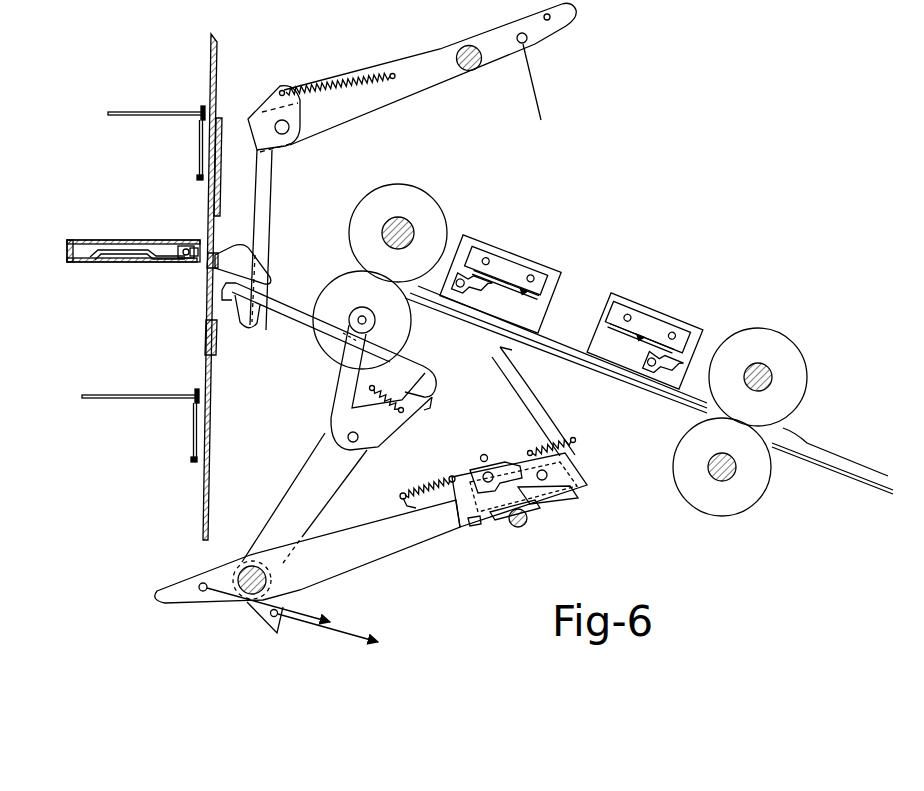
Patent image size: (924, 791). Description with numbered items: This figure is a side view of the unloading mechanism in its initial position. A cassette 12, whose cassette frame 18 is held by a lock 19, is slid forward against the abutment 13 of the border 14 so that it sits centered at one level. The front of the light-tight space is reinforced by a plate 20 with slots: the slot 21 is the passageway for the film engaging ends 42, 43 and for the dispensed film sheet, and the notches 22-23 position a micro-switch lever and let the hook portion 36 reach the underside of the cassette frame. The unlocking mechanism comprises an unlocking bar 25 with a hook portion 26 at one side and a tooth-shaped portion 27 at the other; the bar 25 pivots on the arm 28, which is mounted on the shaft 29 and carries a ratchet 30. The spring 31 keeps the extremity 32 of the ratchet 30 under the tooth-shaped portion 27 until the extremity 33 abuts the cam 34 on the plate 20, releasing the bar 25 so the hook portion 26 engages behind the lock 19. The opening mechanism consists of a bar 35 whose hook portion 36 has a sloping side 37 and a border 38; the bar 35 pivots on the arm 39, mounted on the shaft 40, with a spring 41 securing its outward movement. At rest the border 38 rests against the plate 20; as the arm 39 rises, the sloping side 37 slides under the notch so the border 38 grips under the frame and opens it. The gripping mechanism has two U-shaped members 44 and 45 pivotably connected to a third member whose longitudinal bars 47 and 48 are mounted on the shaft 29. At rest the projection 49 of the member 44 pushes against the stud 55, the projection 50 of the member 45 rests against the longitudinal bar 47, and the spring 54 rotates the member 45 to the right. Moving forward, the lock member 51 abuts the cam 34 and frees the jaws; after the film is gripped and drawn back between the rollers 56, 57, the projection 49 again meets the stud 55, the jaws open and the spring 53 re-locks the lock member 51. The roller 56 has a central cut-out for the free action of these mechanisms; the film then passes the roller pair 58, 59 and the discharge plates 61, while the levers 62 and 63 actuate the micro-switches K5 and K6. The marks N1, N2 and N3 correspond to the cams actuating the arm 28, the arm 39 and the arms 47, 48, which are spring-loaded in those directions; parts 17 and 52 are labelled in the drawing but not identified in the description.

The cassette 12 is at (111, 251).
The abutment 13 is at (200, 108).
The border 14 is at (197, 178).
The cassette lower wall 17 is at (94, 262).
The cassette frame 18 is at (106, 240).
The lock 19 is at (133, 262).
The plate 20 is at (222, 208).
The slot 21 is at (214, 242).
The notches 22-23 is at (212, 200).
The unlocking bar 25 is at (302, 330).
The hook portion 26 is at (233, 296).
The tooth-shaped portion 27 is at (438, 385).
The arm 28 is at (306, 468).
The shaft 29 is at (246, 566).
The ratchet 30 is at (382, 443).
The spring 31 is at (380, 406).
The extremity of the ratchet 32 is at (432, 405).
The extremity of the ratchet 33 is at (370, 320).
The cam 34 is at (270, 277).
The bar 35 is at (272, 204).
The hook portion 36 is at (262, 325).
The sloping side 37 is at (243, 330).
The border 38 is at (224, 342).
The arm 39 is at (378, 105).
The shaft 40 is at (473, 72).
The spring 41 is at (330, 82).
The film engaging end 42 is at (552, 408).
The film engaging end 43 is at (528, 405).
The U-shaped member 44 is at (585, 482).
The U-shaped member 45 is at (556, 502).
The longitudinal bar 47 is at (352, 562).
The longitudinal bar 48 is at (382, 553).
The projection 49 is at (500, 520).
The projection 50 is at (474, 527).
The lock member 51 is at (508, 462).
The spring 52 is at (571, 440).
The spring 53 is at (482, 455).
The spring 54 is at (424, 484).
The stud 55 is at (528, 522).
The roller 56 is at (332, 282).
The roller 57 is at (350, 228).
The roller 58 is at (735, 503).
The roller 59 is at (770, 330).
The discharge plates 61 is at (862, 478).
The lever 62 is at (470, 302).
The lever 63 is at (670, 378).
The micro-switch K5 is at (515, 261).
The micro-switch K6 is at (653, 312).
The cam N1 is at (342, 635).
The cam N2 is at (543, 92).
The cam N3 is at (284, 609).